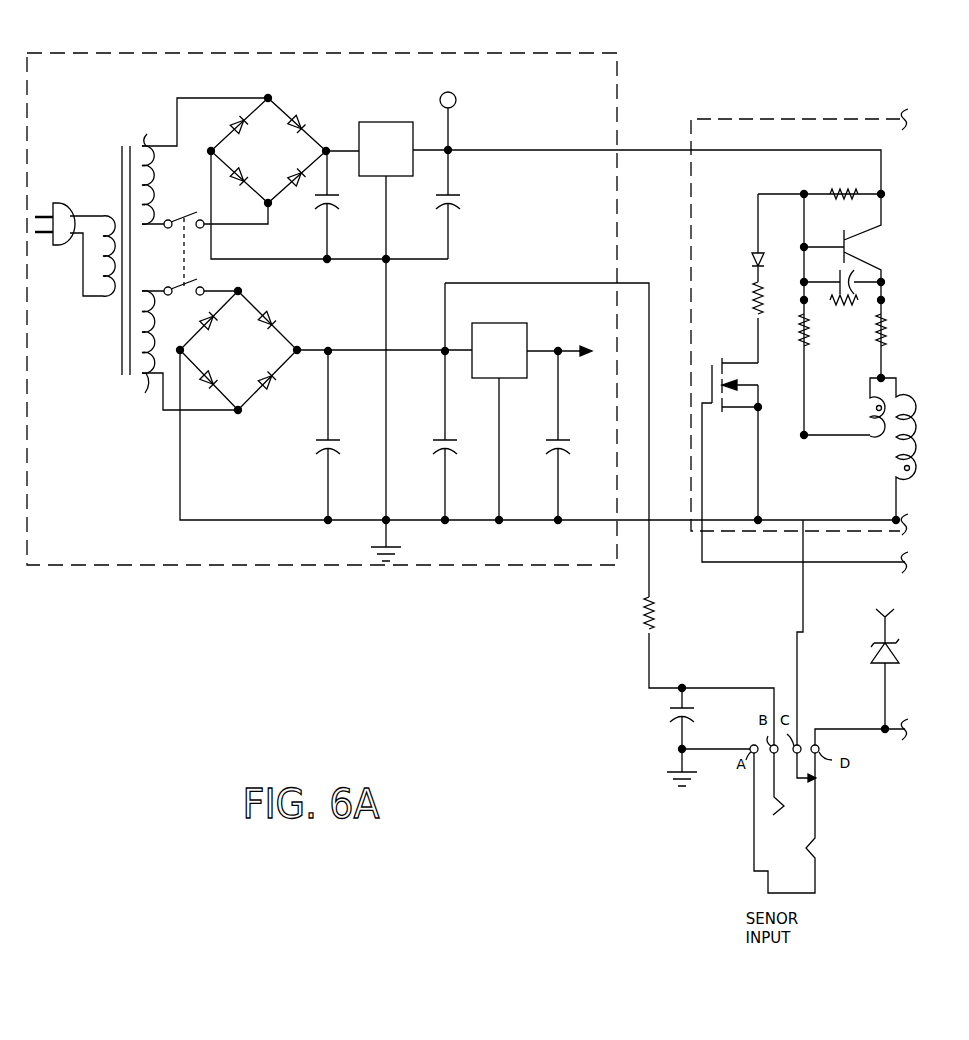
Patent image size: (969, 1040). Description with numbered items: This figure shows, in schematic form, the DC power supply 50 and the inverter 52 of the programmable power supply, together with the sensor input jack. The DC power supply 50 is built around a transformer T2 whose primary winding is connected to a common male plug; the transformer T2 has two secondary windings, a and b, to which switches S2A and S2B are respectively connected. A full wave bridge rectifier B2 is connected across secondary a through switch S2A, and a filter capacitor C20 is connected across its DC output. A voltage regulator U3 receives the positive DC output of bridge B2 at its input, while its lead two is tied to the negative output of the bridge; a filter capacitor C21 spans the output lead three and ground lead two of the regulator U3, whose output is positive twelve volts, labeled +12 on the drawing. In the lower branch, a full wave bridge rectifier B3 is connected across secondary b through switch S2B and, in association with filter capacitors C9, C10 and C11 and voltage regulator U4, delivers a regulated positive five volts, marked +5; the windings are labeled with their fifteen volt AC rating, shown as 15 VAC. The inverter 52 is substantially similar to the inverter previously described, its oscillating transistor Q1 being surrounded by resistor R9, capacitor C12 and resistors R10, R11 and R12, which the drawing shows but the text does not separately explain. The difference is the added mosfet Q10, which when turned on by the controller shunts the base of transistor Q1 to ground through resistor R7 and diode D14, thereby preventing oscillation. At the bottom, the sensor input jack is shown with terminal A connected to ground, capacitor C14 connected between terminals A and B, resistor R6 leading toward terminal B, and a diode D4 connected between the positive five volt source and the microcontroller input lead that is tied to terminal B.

The DC power supply 50 is at (203, 47).
The inverter 52 is at (768, 112).
The 15 VAC input plug 15 is at (68, 230).
The +12V output terminal 12 is at (448, 110).
The +5V output 5 is at (564, 340).
The transformer T2 is at (185, 254).
The switch S2A is at (204, 225).
The switch S2B is at (189, 281).
The full wave bridge rectifier B2 is at (269, 151).
The full wave bridge rectifier B3 is at (239, 351).
The voltage regulator U3 is at (386, 159).
The voltage regulator U4 is at (499, 364).
The filter capacitor C20 is at (337, 205).
The filter capacitor C21 is at (458, 204).
The filter capacitor C9 is at (320, 435).
The filter capacitor C10 is at (455, 435).
The filter capacitor C11 is at (568, 435).
The resistor R9 is at (844, 183).
The diode D14 is at (737, 258).
The resistor R7 is at (744, 298).
The transistor Q1 is at (856, 247).
The capacitor C12 is at (842, 276).
The resistor R10 is at (845, 313).
The resistor R11 is at (821, 340).
The resistor R12 is at (899, 330).
The mosfet Q10 is at (732, 373).
The resistor R6 is at (635, 613).
The capacitor C14 is at (693, 727).
The diode D4 is at (872, 628).